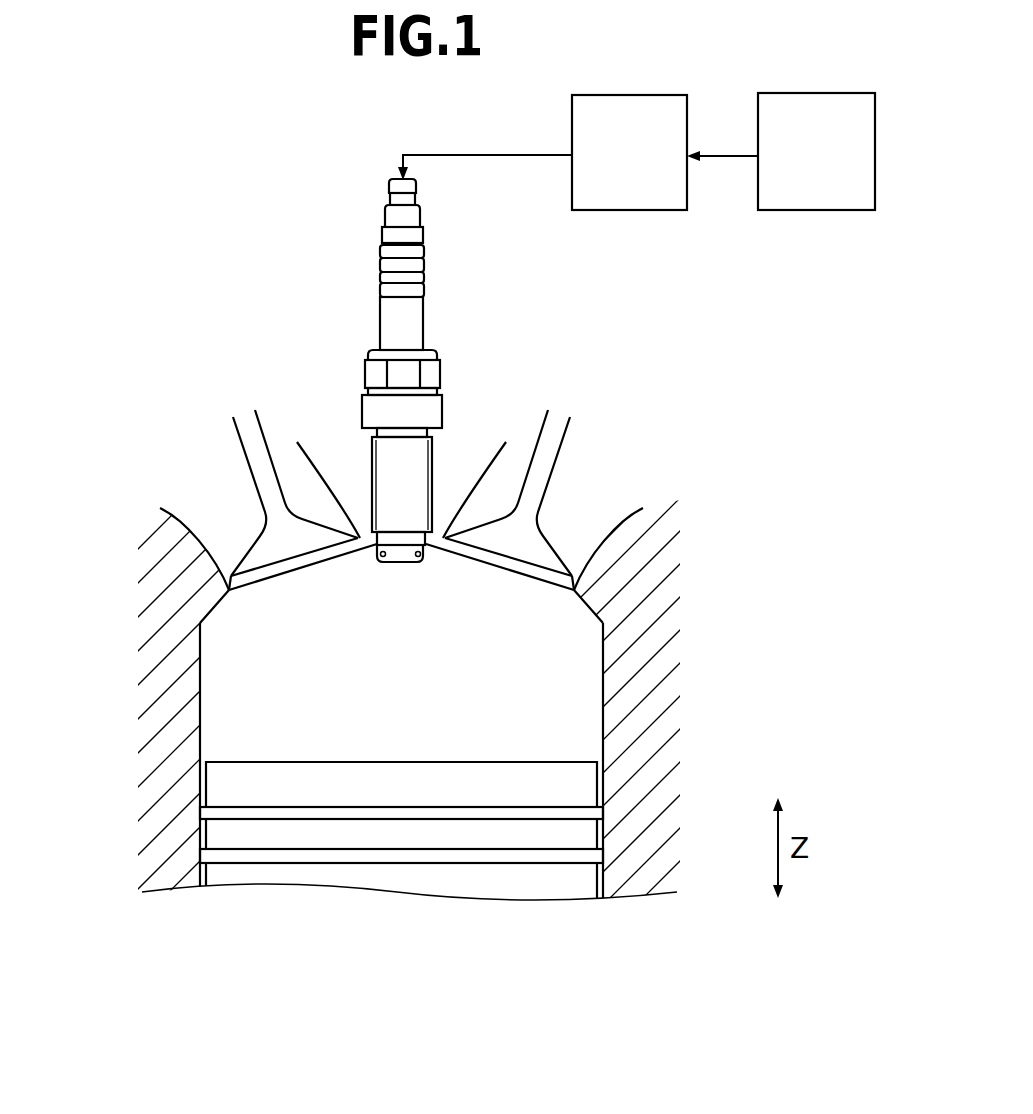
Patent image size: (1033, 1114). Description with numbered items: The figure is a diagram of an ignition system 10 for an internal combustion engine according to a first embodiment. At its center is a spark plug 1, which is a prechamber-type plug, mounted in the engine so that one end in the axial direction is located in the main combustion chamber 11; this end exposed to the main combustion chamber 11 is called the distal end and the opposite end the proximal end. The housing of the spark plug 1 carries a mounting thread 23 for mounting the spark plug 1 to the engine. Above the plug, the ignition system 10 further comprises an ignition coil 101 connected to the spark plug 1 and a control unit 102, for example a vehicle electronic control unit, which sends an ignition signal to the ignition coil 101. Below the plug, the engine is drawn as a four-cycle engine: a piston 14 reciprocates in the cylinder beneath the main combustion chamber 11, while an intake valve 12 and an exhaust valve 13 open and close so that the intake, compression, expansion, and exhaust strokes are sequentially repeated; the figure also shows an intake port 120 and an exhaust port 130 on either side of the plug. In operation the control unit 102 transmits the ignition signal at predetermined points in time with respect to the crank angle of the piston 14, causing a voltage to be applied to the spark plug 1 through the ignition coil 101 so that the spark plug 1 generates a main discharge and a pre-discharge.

The ignition system 10 is at (254, 261).
The spark plug 1 is at (388, 370).
The mounting thread 23 is at (372, 460).
The main combustion chamber 11 is at (552, 688).
The intake valve 12 is at (537, 543).
The exhaust valve 13 is at (260, 560).
The piston 14 is at (412, 835).
The ignition coil 101 is at (635, 198).
The control unit 102 is at (810, 202).
The intake port 120 is at (592, 530).
The exhaust port 130 is at (207, 526).